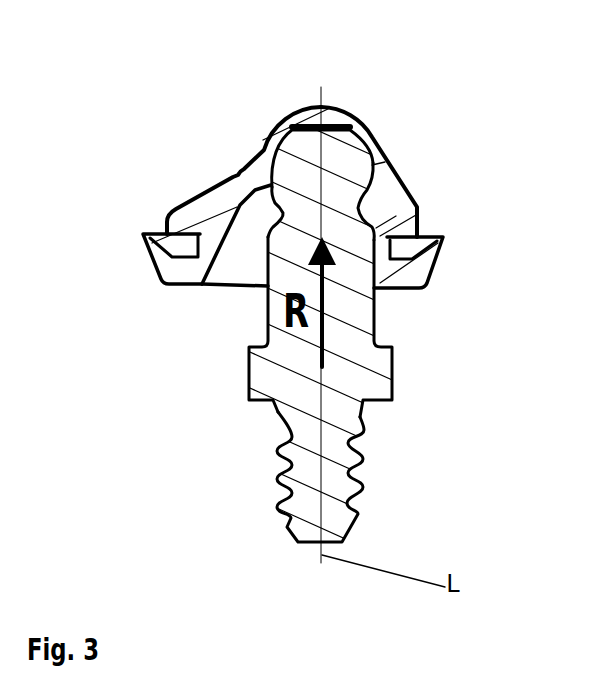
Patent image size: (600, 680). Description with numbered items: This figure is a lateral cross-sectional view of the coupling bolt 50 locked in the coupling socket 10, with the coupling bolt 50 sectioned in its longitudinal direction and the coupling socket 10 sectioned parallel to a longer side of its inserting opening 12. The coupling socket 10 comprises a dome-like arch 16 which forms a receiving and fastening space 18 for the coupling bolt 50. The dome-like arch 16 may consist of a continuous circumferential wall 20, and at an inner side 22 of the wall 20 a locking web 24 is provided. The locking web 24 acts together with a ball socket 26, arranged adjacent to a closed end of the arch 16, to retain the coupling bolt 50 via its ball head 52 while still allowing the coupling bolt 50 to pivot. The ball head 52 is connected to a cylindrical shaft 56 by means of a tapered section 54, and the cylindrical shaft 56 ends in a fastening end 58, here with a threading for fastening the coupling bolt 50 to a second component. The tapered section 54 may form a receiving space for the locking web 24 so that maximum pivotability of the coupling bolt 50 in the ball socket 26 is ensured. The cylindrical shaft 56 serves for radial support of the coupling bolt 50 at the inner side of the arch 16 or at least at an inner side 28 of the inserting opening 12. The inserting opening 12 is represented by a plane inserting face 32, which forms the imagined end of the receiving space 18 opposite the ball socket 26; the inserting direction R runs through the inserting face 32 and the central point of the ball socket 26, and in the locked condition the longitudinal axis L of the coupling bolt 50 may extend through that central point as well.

The coupling socket 10 is at (228, 178).
The inserting opening 12 is at (232, 225).
The dome-like arch 16 is at (397, 170).
The receiving and fastening space 18 is at (245, 263).
The continuous circumferential wall 20 is at (405, 198).
The inner side of the wall 22 is at (246, 199).
The locking web 24 is at (360, 207).
The ball socket 26 is at (340, 163).
The inner side of the inserting opening 28 is at (227, 230).
The plane inserting face 32 is at (252, 282).
The coupling bolt 50 is at (368, 378).
The ball head 52 is at (345, 148).
The tapered section 54 is at (438, 243).
The cylindrical shaft 56 is at (362, 330).
The fastening end 58 is at (335, 445).